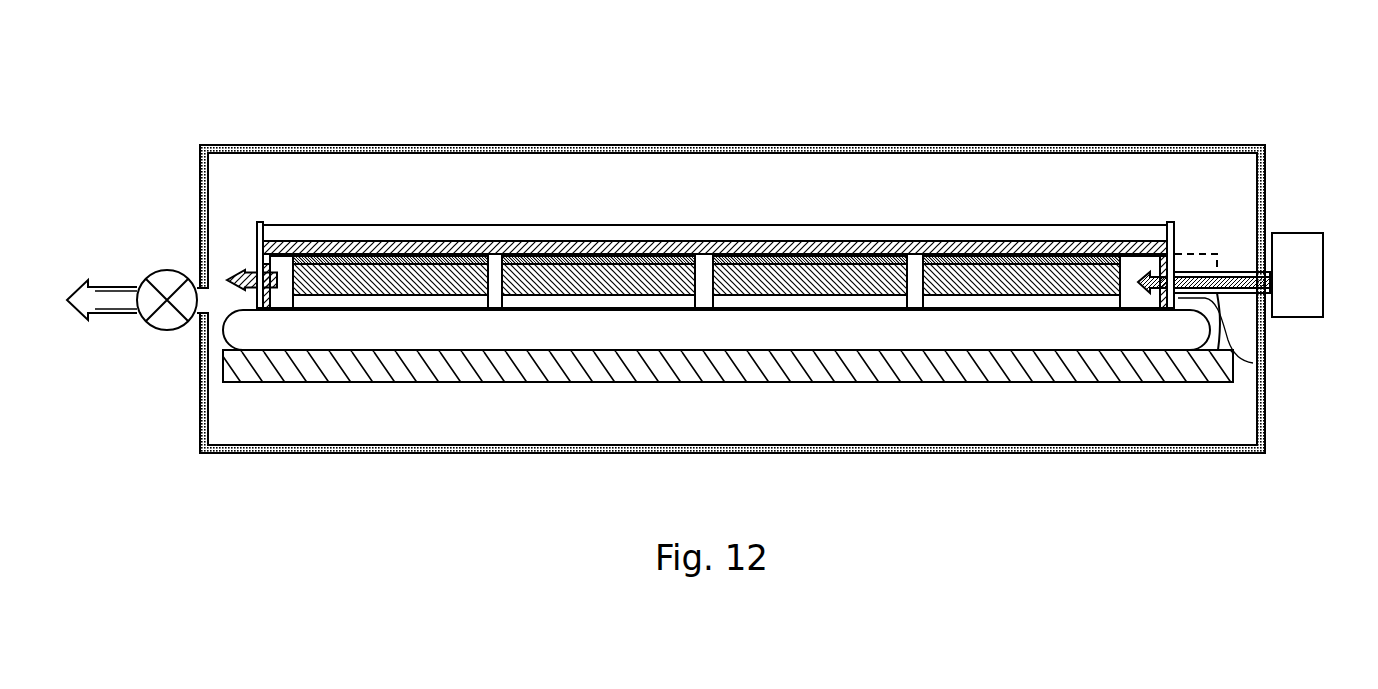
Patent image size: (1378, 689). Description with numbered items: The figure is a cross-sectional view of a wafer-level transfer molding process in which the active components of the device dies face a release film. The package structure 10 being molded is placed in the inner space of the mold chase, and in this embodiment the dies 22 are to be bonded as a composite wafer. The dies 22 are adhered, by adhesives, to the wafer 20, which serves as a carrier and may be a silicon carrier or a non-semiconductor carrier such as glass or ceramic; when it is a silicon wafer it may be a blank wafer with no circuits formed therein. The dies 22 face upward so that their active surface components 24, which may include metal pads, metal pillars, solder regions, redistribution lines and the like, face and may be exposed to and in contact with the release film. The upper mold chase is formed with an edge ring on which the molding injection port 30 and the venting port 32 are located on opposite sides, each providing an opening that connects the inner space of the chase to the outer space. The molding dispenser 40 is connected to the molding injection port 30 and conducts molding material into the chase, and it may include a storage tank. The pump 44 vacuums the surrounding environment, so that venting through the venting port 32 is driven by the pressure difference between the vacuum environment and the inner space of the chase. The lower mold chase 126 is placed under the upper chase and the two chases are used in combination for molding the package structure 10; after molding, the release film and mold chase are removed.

The package structure 10 is at (1258, 334).
The wafer 20 is at (705, 336).
The dies 22 is at (513, 262).
The active surface components 24 is at (535, 258).
The molding injection port 30 is at (1253, 363).
The venting port 32 is at (256, 268).
The molding dispenser 40 is at (1312, 283).
The pump 44 is at (150, 330).
The lower mold chase 126 is at (866, 368).